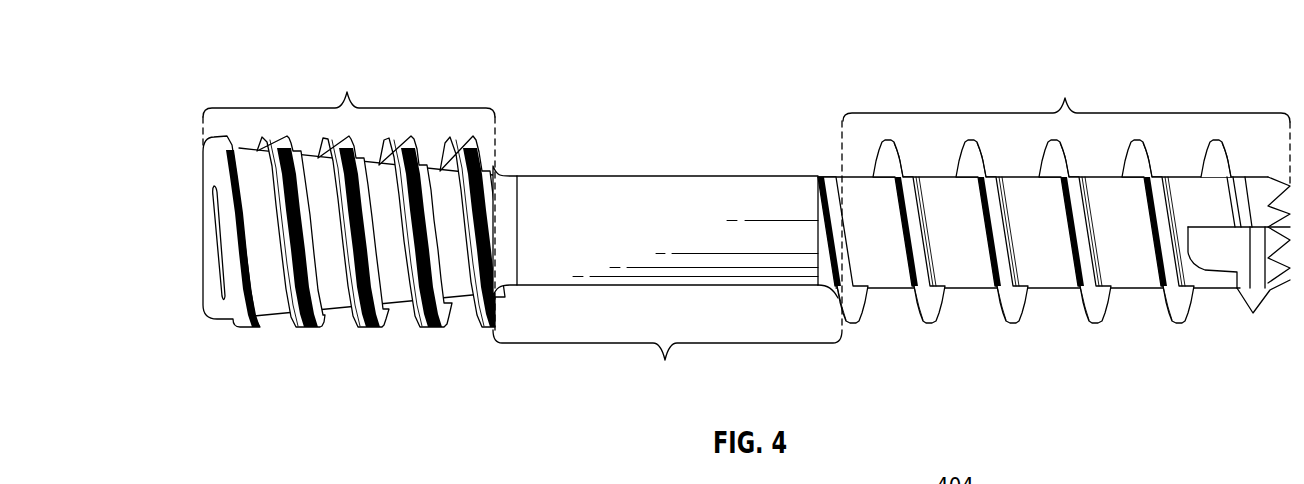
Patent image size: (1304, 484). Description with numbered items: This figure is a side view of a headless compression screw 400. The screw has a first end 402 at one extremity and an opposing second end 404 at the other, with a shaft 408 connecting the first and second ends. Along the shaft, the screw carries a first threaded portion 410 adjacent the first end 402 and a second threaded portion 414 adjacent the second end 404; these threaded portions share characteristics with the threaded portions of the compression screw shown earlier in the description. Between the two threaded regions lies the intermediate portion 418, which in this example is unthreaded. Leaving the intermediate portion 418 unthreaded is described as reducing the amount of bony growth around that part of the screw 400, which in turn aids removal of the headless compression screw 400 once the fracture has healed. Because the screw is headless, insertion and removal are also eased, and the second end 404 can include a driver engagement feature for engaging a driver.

The headless compression screw 400 is at (219, 67).
The first end 402 is at (1276, 194).
The second end 404 is at (203, 198).
The shaft 408 is at (832, 178).
The first threaded portion 410 is at (1065, 98).
The second threaded portion 414 is at (347, 92).
The intermediate portion 418 is at (665, 360).